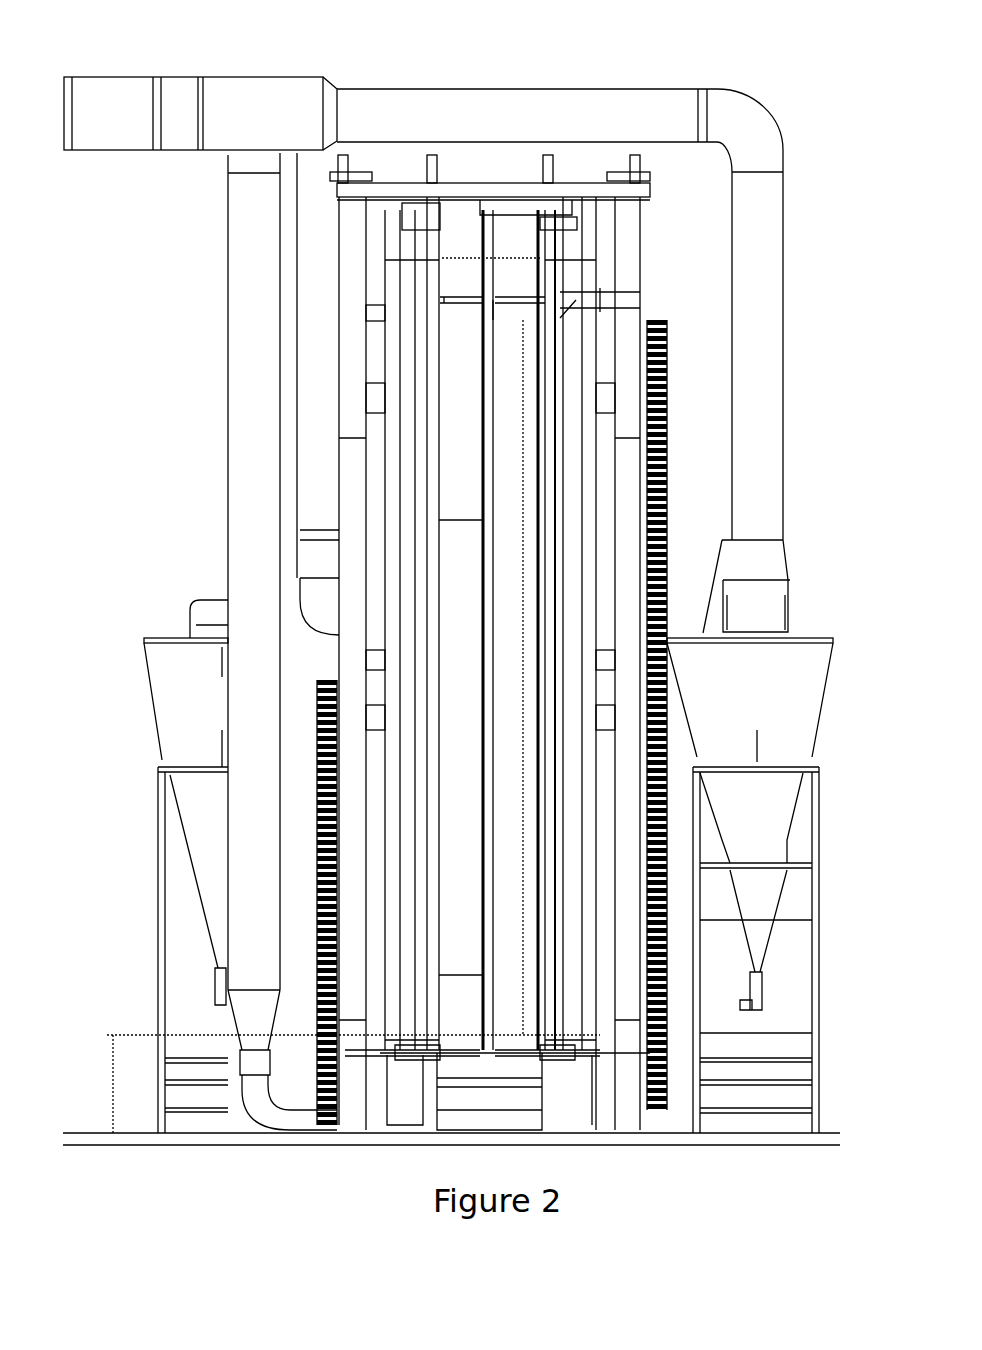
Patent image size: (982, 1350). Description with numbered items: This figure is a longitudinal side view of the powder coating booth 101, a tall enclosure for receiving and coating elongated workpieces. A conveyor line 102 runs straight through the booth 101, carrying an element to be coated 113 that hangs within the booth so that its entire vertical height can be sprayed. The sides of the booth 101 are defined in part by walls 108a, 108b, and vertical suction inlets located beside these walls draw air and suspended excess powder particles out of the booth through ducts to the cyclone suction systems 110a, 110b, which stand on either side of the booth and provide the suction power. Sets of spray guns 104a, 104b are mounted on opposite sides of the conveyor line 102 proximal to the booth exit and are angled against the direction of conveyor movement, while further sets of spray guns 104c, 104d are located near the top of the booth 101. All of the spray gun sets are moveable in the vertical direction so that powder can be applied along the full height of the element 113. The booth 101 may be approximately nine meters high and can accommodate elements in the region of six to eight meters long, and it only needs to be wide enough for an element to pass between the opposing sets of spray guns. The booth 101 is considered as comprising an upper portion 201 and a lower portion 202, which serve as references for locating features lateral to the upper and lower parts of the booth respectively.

The coating booth 101 is at (580, 137).
The conveyor line 102 is at (482, 200).
The set of spray guns 104a is at (405, 1062).
The set of spray guns 104b is at (558, 1058).
The set of spray guns 104c is at (448, 300).
The set of spray guns 104d is at (520, 300).
The wall 108a is at (430, 367).
The wall 108b is at (558, 400).
The cyclone suction system 110a is at (175, 675).
The cyclone suction system 110b is at (793, 687).
The element to be coated 113 is at (490, 957).
The upper portion 201 is at (434, 507).
The lower portion 202 is at (434, 962).